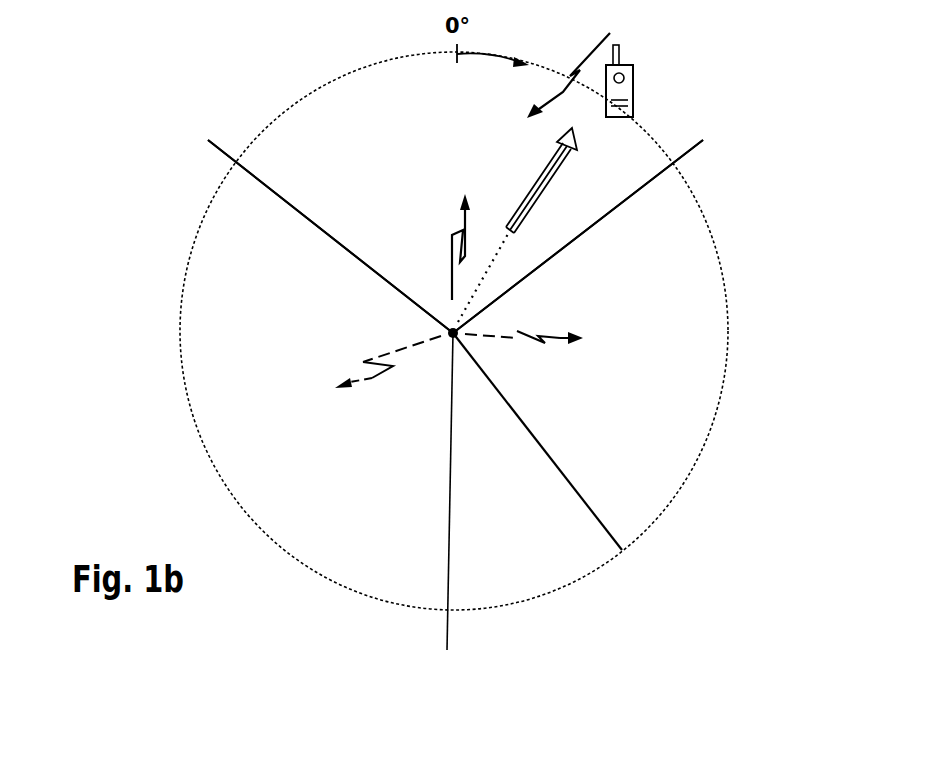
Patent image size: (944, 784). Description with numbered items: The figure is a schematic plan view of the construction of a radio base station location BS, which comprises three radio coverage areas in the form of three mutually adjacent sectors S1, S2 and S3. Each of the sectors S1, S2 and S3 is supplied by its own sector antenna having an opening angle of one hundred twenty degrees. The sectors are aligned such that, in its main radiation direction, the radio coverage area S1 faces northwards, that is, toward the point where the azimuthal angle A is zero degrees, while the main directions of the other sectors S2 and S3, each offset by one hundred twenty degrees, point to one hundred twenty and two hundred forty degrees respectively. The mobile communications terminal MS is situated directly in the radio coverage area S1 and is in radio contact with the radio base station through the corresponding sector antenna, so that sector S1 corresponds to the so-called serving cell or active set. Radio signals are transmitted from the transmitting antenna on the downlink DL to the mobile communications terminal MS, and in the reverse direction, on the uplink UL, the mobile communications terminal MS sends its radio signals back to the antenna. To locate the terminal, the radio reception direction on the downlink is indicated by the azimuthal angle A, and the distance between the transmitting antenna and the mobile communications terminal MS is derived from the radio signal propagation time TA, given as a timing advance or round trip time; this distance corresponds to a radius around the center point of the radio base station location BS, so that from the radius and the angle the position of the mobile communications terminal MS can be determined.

The sector S1 is at (340, 78).
The sector S2 is at (198, 238).
The sector S3 is at (710, 240).
The azimuthal angle A is at (515, 60).
The mobile communications terminal MS is at (634, 90).
The uplink UL is at (553, 88).
The downlink DL is at (451, 250).
The radio base station location BS is at (449, 341).
The radio signal propagation time TA is at (555, 462).